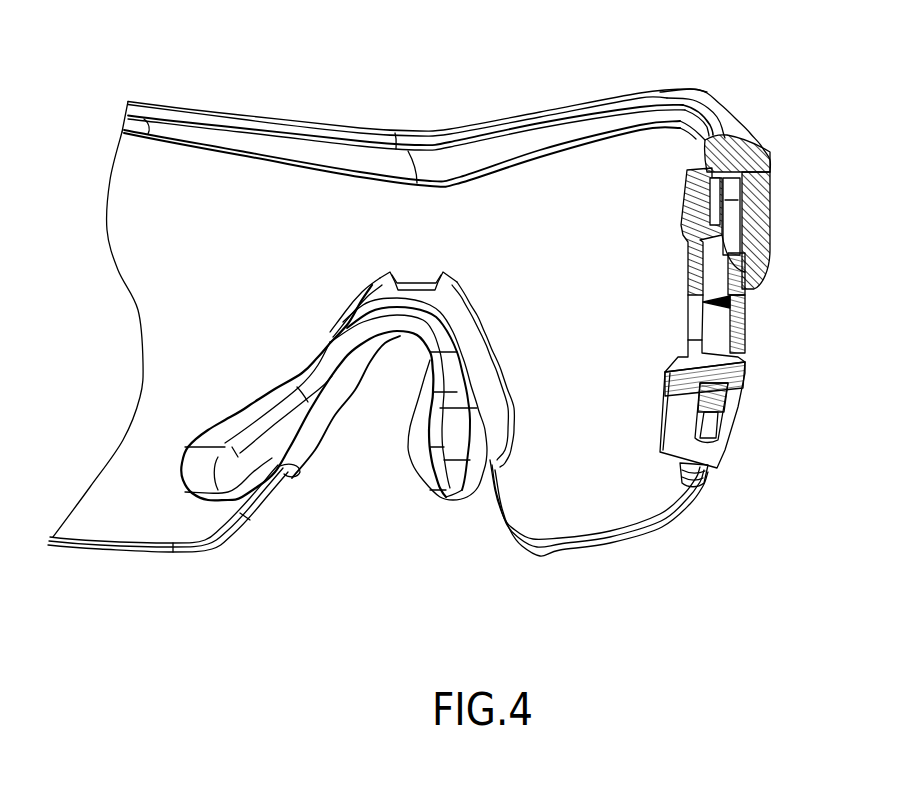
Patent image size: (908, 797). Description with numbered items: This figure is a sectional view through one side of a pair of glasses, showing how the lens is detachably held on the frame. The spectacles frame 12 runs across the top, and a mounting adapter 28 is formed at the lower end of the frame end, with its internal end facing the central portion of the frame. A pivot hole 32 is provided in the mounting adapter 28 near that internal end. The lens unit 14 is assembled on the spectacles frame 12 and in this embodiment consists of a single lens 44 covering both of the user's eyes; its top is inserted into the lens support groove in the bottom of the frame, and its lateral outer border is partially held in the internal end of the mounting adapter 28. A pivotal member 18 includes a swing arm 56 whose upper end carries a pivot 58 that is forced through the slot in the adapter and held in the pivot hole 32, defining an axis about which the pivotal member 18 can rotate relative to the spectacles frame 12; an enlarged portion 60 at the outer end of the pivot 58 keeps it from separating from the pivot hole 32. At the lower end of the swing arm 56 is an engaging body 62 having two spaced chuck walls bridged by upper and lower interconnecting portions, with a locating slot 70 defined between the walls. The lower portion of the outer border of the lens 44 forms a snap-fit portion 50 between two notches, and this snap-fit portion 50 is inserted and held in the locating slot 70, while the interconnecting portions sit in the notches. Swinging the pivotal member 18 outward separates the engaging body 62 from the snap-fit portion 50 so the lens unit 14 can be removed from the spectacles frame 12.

The spectacles frame 12 is at (447, 131).
The lens unit 14 is at (232, 540).
The pivotal member 18 is at (747, 302).
The mounting adapter 28 is at (768, 143).
The pivot hole 32 is at (770, 242).
The lens 44 is at (592, 517).
The snap-fit portion 50 is at (723, 393).
The swing arm 56 is at (750, 267).
The pivot 58 is at (735, 150).
The enlarged portion 60 is at (713, 193).
The engaging body 62 is at (740, 367).
The locating slot 70 is at (730, 420).